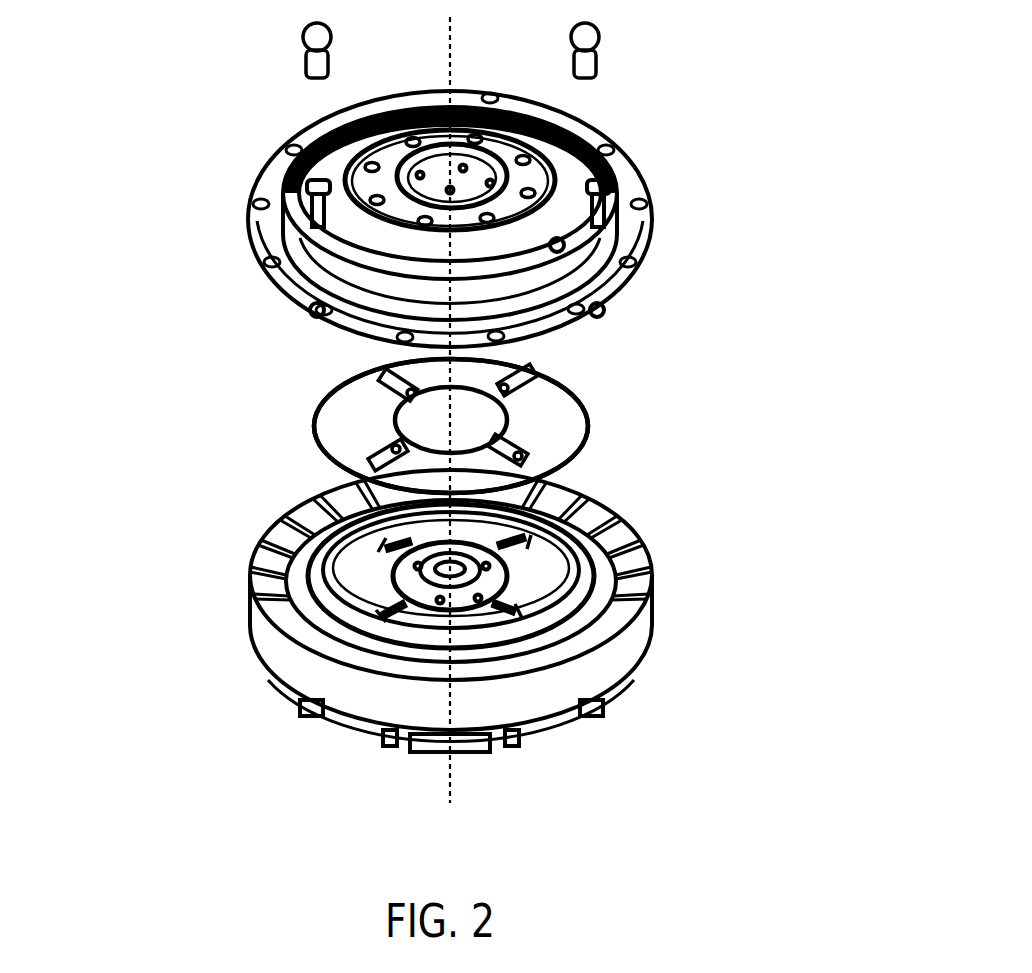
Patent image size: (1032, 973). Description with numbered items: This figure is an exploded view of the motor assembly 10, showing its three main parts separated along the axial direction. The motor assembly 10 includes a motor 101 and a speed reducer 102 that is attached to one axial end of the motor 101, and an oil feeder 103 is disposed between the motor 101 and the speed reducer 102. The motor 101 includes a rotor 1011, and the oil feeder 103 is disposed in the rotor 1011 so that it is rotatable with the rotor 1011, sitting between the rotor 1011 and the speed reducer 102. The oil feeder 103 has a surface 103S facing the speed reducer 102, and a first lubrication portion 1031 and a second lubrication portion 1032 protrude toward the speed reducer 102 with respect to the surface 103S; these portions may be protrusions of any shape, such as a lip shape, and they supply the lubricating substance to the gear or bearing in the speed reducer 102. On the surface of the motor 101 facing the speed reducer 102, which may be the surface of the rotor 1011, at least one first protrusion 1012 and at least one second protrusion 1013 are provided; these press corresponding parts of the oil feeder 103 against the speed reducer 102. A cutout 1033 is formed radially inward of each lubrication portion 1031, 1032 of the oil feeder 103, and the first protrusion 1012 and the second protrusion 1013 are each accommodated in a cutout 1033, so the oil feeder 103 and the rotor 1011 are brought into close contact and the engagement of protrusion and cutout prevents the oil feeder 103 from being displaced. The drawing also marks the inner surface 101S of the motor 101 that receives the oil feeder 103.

The motor assembly 10 is at (470, 402).
The speed reducer 102 is at (648, 200).
The oil feeder 103 is at (590, 420).
The surface of the oil feeder 103S is at (550, 407).
The first lubrication portion 1031 is at (372, 450).
The second lubrication portion 1032 is at (385, 383).
The cutout 1033 is at (373, 442).
The motor 101 is at (658, 628).
The inner surface of base 101S is at (537, 598).
The rotor 1011 is at (550, 562).
The first protrusion 1012 is at (610, 495).
The second protrusion 1013 is at (383, 547).